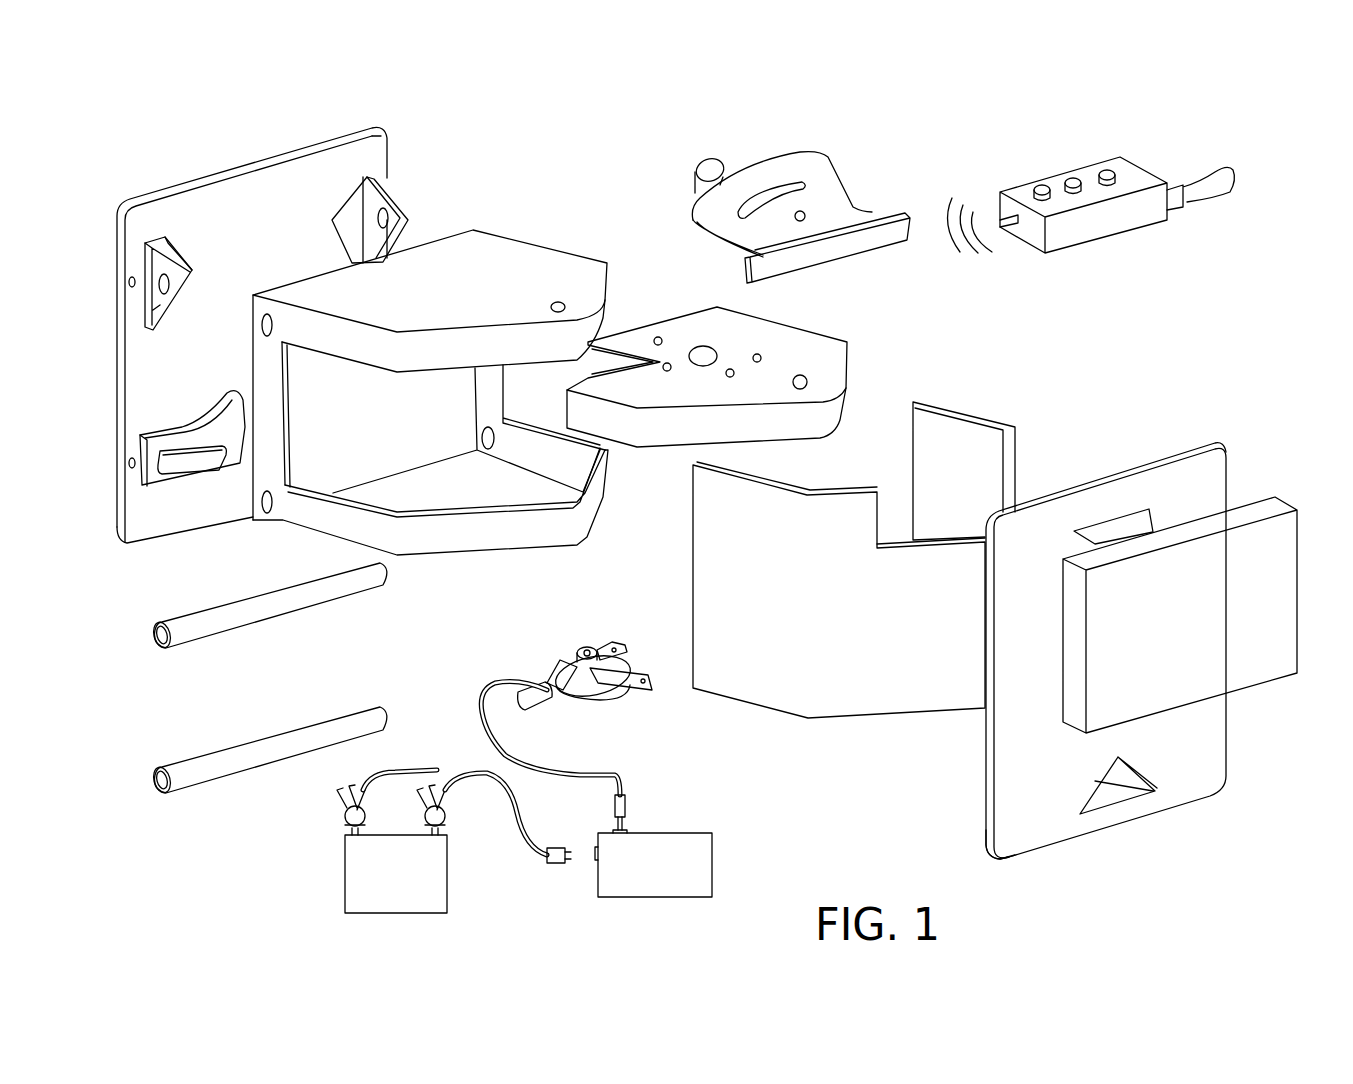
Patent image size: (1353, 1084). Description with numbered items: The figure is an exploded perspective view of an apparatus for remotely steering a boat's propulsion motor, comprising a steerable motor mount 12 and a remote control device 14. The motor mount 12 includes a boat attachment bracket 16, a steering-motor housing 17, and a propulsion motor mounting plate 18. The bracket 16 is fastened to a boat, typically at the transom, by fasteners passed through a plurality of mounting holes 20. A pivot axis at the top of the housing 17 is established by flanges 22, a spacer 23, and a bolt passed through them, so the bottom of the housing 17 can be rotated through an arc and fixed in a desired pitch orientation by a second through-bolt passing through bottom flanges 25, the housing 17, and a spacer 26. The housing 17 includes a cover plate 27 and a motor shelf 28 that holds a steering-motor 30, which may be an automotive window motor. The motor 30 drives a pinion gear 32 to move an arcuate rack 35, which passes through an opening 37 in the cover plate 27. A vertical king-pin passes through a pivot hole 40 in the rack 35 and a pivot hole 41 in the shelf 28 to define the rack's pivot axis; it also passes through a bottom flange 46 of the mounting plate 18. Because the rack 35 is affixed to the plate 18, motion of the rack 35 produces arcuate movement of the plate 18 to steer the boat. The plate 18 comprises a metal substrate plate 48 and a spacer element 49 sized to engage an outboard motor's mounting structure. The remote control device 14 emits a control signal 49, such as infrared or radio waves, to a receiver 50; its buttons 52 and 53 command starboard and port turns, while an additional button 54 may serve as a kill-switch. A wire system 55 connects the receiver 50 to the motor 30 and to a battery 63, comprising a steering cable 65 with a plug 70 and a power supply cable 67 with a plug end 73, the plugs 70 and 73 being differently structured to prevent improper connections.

The steerable motor mount 12 is at (913, 355).
The remote control device 14 is at (1097, 230).
The boat attachment bracket 16 is at (378, 143).
The steering-motor housing 17 is at (470, 238).
The propulsion motor mounting plate 18 is at (1198, 755).
The mounting holes 20 is at (128, 282).
The flanges 22 is at (153, 313).
The spacer 23 is at (200, 622).
The bottom flanges 25 is at (192, 482).
The spacer 26 is at (212, 765).
The cover plate 27 is at (778, 638).
The motor shelf 28 is at (670, 427).
The steering-motor 30 is at (565, 652).
The pinion gear 32 is at (700, 178).
The arcuate rack 35 is at (807, 162).
The opening 37 is at (936, 530).
The pivot hole 40 is at (798, 212).
The pivot hole 41 is at (806, 380).
The bottom flange 46 is at (1107, 792).
The metal substrate plate 48 is at (1009, 844).
The spacer element 49 is at (957, 258).
The receiver 50 is at (653, 863).
The button 52 is at (1070, 180).
The button 53 is at (1037, 190).
The button 54 is at (1107, 172).
The wire system 55 is at (705, 802).
The battery 63 is at (392, 849).
The steering cable 65 is at (478, 712).
The power supply cable 67 is at (510, 817).
The plug 70 is at (626, 808).
The plug end 73 is at (553, 864).